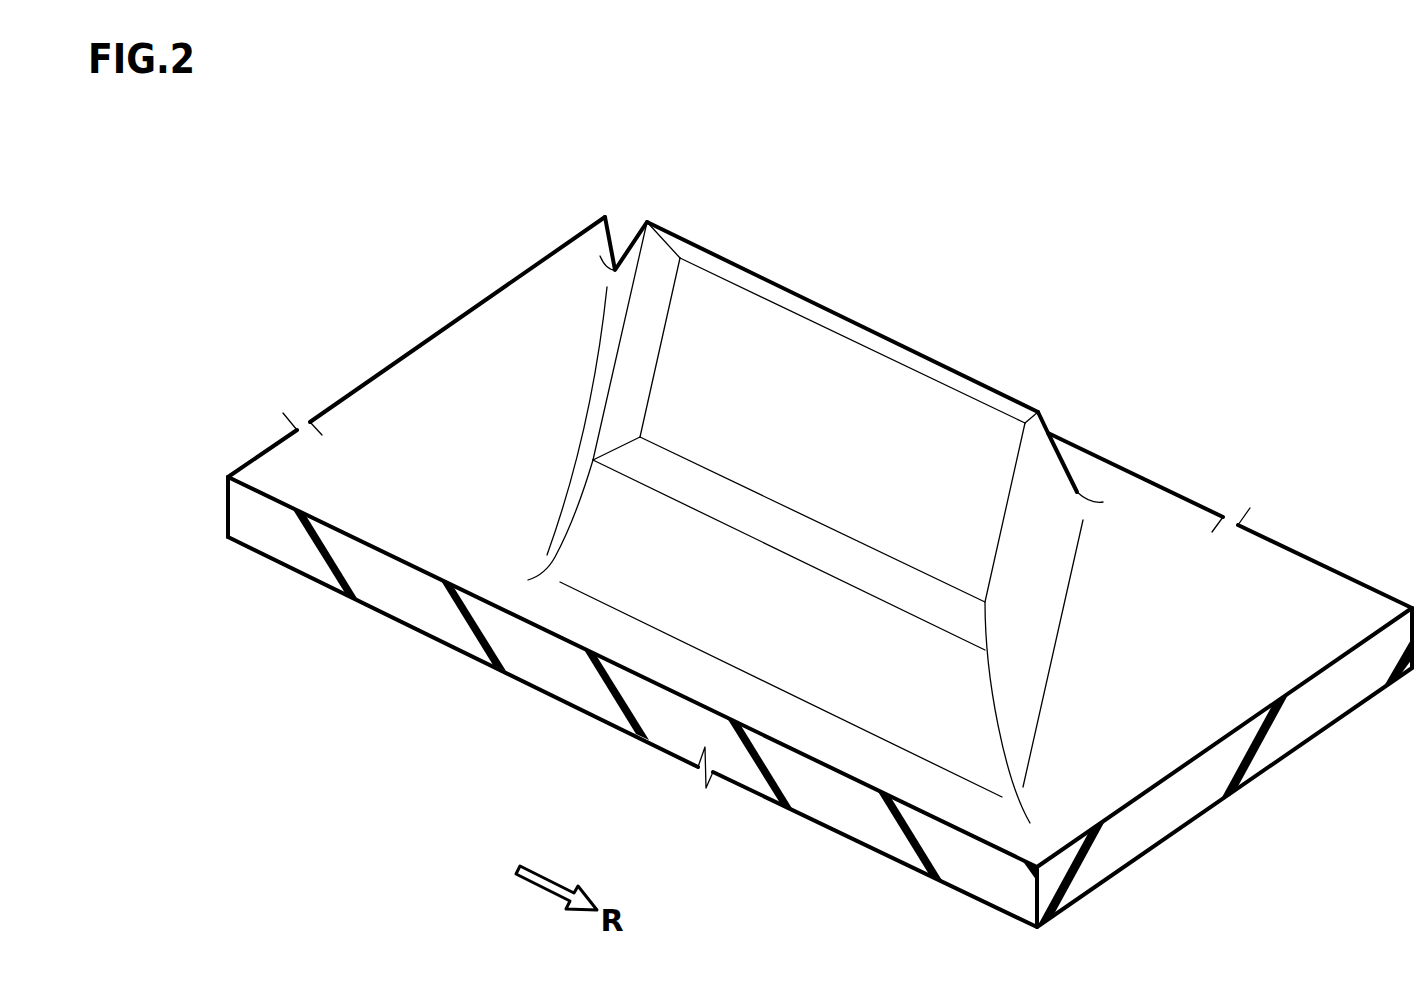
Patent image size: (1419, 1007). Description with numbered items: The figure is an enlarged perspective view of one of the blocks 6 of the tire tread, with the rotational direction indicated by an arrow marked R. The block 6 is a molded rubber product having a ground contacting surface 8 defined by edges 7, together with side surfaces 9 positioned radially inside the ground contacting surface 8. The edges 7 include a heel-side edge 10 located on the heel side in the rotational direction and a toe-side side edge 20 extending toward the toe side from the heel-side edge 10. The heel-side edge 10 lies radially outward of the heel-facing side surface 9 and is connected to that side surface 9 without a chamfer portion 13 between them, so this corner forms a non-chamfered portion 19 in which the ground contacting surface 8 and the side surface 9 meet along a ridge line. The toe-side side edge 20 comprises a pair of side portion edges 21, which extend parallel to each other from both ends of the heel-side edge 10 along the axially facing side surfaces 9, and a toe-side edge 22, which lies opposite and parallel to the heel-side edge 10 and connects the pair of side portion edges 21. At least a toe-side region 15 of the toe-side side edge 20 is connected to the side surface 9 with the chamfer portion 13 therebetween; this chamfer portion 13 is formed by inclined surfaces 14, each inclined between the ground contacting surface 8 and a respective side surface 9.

The block 6 is at (550, 200).
The edges 7 is at (805, 151).
The ground contacting surface 8 is at (751, 435).
The side surfaces 9 is at (585, 448).
The heel-side edge 10 is at (1008, 497).
The chamfer portion 13 is at (645, 343).
The inclined surfaces 14 is at (836, 552).
The toe-side region 15 is at (648, 397).
The non-chamfered portion 19 is at (1007, 578).
The toe-side side edge 20 is at (726, 176).
The side portion edges 21 is at (775, 302).
The toe-side edge 22 is at (672, 313).